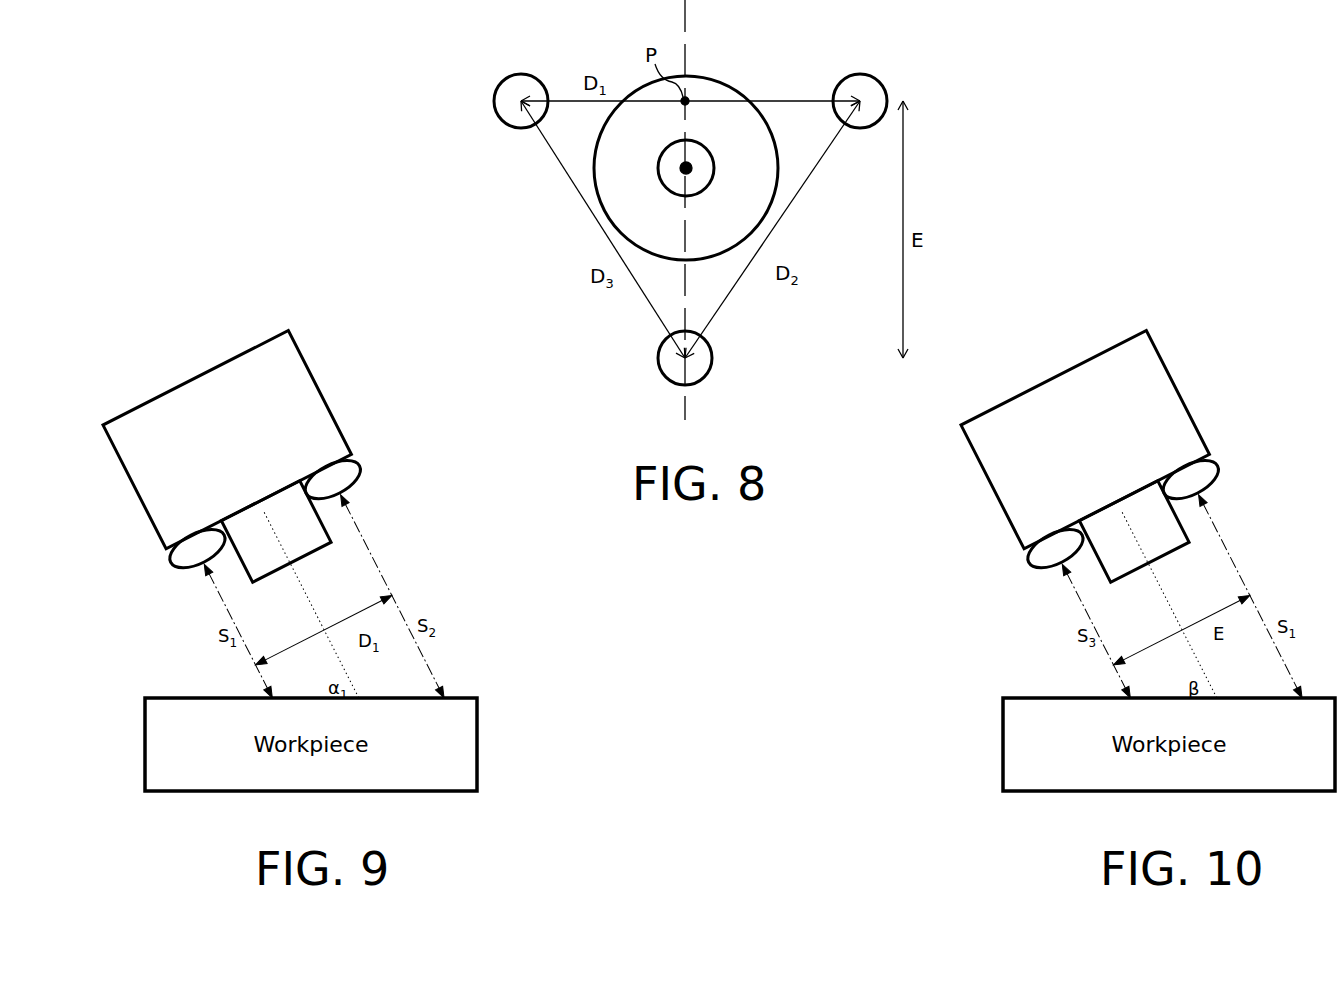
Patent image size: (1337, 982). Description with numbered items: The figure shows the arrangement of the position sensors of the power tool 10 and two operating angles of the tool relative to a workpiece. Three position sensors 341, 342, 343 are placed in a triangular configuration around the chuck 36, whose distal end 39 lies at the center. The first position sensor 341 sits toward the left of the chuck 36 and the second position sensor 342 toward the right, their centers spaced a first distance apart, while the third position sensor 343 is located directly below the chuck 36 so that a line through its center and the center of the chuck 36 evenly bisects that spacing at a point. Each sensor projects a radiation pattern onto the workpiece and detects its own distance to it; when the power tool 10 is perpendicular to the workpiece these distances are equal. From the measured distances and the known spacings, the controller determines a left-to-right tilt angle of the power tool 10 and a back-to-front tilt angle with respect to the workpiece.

In FIG. 9, the power tool 10 is at (342, 354).
In FIG. 10, the power tool 10 is at (1119, 421).
In FIG. 8, the first position sensor 341 is at (510, 116).
In FIG. 9, the first position sensor 341 is at (198, 546).
In FIG. 10, the first position sensor 341 is at (1213, 493).
In FIG. 8, the second position sensor 342 is at (867, 128).
In FIG. 9, the second position sensor 342 is at (347, 473).
In FIG. 8, the third position sensor 343 is at (713, 373).
In FIG. 10, the third position sensor 343 is at (1048, 576).
In FIG. 8, the chuck 36 is at (768, 159).
In FIG. 9, the chuck 36 is at (307, 544).
In FIG. 10, the chuck 36 is at (1149, 537).
In FIG. 8, the distal end of the chuck 39 is at (691, 175).